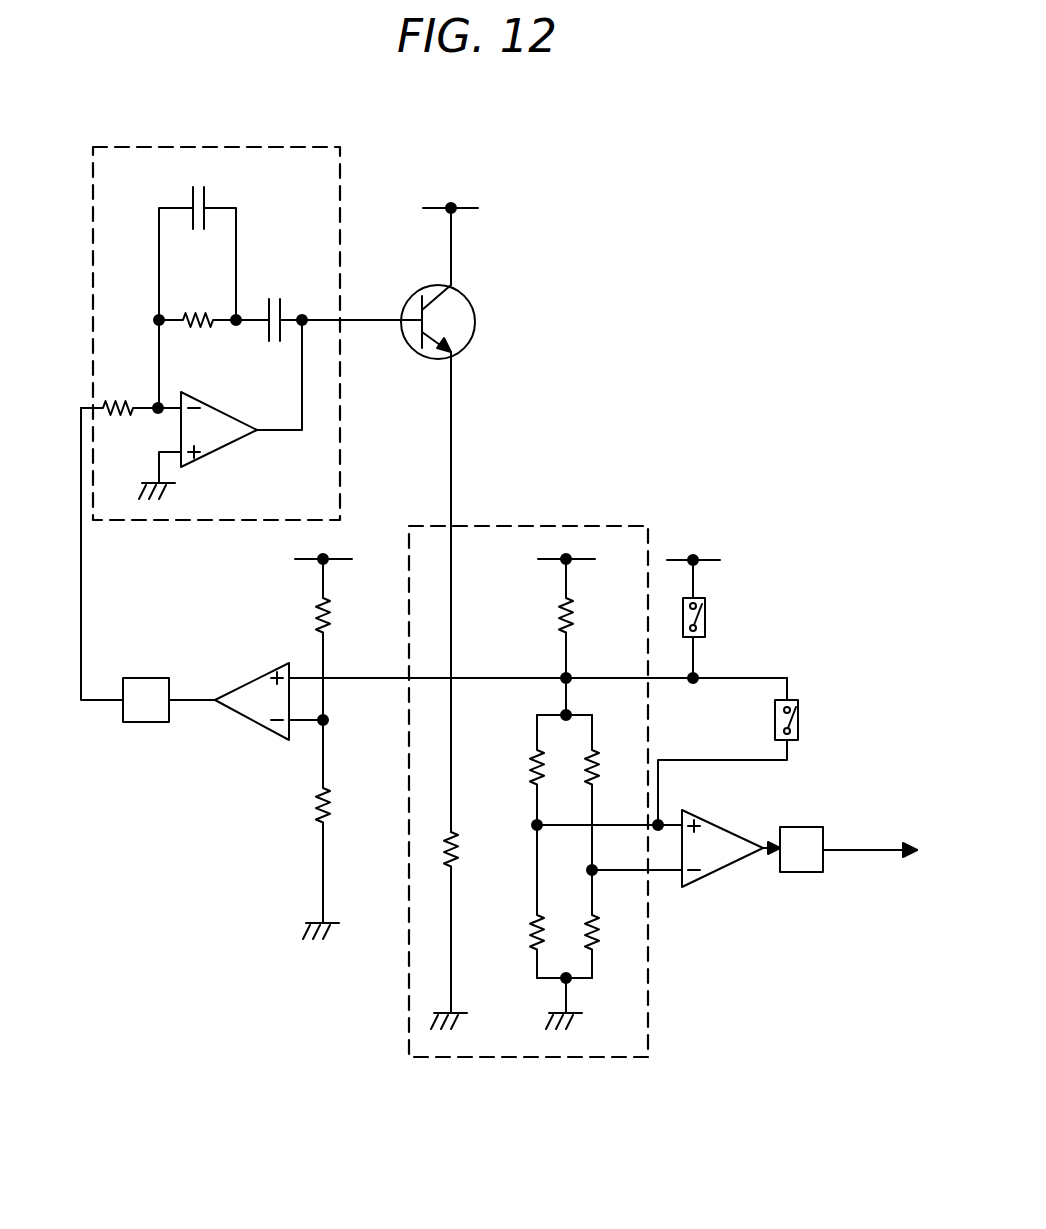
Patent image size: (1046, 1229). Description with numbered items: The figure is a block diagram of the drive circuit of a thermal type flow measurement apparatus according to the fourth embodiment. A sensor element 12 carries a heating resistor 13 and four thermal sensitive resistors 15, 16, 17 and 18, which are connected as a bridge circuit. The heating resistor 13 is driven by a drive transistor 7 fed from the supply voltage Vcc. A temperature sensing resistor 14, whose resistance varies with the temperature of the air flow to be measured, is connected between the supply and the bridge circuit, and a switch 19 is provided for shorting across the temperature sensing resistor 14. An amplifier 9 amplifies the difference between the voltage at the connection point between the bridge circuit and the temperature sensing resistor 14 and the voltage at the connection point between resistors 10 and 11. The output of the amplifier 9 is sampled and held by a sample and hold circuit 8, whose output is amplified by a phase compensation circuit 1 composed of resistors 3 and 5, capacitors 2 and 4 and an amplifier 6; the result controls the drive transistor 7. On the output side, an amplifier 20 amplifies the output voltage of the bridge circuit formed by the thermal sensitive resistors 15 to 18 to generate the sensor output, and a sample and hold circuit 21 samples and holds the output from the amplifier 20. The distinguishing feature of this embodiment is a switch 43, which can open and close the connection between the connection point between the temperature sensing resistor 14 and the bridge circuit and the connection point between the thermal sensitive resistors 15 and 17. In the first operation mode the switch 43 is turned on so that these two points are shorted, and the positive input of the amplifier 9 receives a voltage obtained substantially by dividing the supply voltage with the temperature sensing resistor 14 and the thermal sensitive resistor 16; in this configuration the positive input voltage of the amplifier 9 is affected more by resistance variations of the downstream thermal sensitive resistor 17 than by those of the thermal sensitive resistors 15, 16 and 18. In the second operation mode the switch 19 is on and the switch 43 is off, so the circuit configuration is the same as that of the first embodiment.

The phase compensation circuit 1 is at (286, 147).
The capacitor 2 is at (203, 178).
The resistor 3 is at (192, 308).
The capacitor 4 is at (277, 298).
The resistor 5 is at (117, 398).
The amplifier 6 is at (222, 410).
The drive transistor 7 is at (474, 305).
The sample and hold circuit 8 is at (143, 683).
The amplifier 9 is at (256, 680).
The resistor 10 is at (333, 618).
The resistor 11 is at (333, 801).
The sensor element 12 is at (608, 526).
The heating resistor 13 is at (460, 841).
The temperature sensing resistor 14 is at (580, 620).
The thermal sensitive resistor 15 is at (522, 765).
The thermal sensitive resistor 16 is at (605, 767).
The thermal sensitive resistor 17 is at (522, 929).
The thermal sensitive resistor 18 is at (605, 930).
The switch 19 is at (706, 614).
The amplifier 20 is at (714, 823).
The sample and hold circuit 21 is at (793, 826).
The switch 43 is at (800, 711).